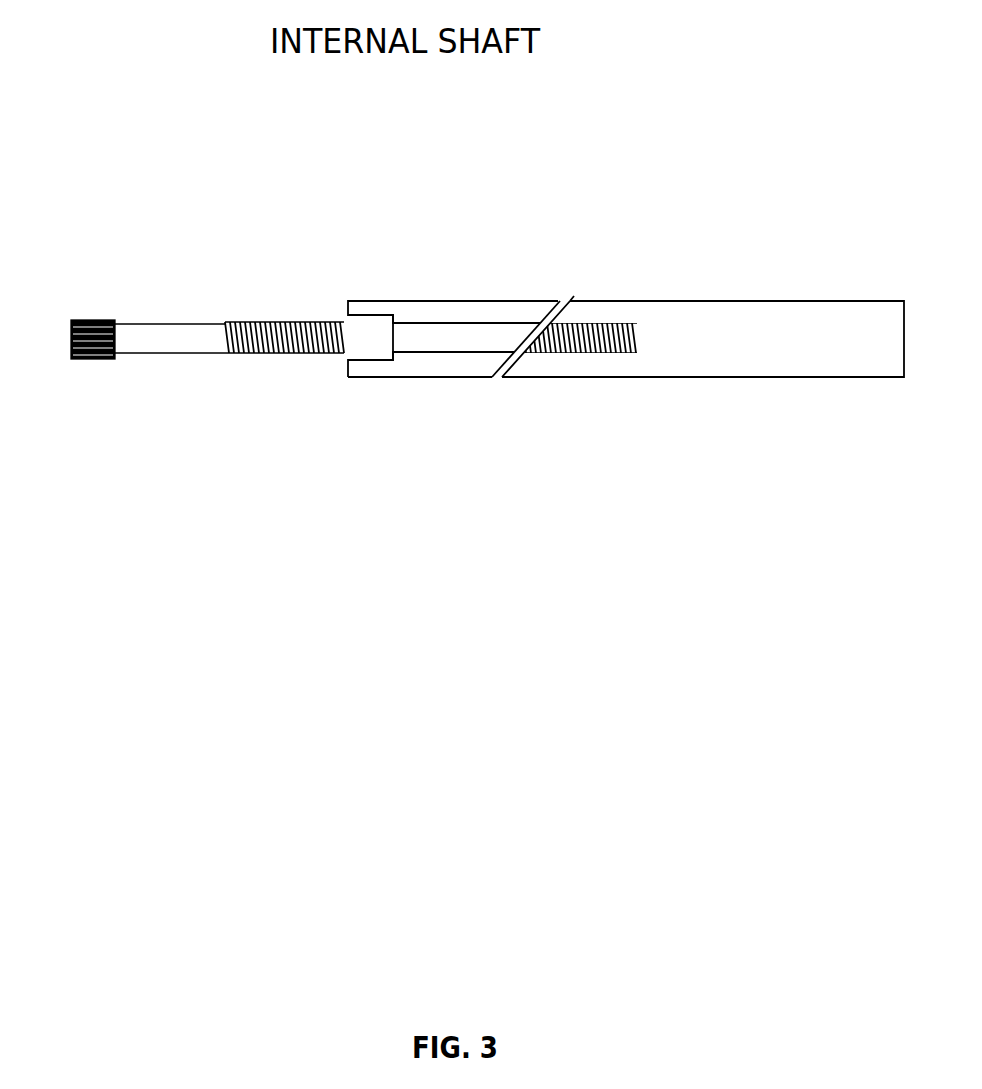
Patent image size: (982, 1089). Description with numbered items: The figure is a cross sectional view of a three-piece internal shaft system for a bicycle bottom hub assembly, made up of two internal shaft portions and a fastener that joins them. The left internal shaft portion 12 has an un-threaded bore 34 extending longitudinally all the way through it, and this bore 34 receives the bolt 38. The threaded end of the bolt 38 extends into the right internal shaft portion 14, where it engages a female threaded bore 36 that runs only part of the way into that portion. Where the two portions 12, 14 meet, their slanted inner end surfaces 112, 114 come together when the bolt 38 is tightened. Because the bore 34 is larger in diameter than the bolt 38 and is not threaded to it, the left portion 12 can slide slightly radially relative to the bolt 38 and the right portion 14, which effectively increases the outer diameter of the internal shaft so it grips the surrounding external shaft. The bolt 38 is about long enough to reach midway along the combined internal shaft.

The left internal shaft portion 12 is at (402, 310).
The right internal shaft portion 14 is at (738, 320).
The un-threaded bore 34 is at (358, 334).
The female threaded bore 36 is at (602, 310).
The bolt 38 is at (150, 337).
The slanted inner end surface 112 is at (574, 297).
The slanted inner end surface 114 is at (493, 367).